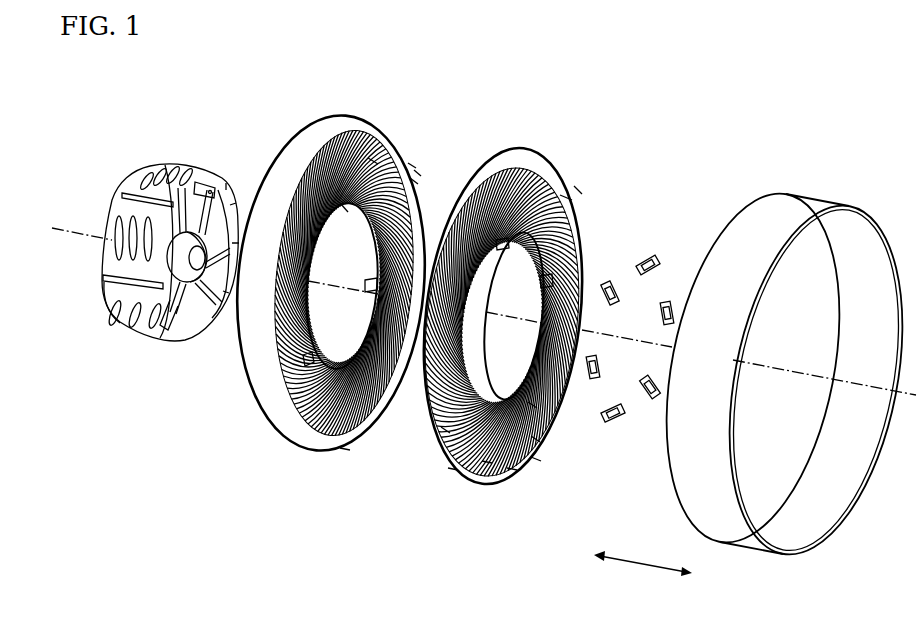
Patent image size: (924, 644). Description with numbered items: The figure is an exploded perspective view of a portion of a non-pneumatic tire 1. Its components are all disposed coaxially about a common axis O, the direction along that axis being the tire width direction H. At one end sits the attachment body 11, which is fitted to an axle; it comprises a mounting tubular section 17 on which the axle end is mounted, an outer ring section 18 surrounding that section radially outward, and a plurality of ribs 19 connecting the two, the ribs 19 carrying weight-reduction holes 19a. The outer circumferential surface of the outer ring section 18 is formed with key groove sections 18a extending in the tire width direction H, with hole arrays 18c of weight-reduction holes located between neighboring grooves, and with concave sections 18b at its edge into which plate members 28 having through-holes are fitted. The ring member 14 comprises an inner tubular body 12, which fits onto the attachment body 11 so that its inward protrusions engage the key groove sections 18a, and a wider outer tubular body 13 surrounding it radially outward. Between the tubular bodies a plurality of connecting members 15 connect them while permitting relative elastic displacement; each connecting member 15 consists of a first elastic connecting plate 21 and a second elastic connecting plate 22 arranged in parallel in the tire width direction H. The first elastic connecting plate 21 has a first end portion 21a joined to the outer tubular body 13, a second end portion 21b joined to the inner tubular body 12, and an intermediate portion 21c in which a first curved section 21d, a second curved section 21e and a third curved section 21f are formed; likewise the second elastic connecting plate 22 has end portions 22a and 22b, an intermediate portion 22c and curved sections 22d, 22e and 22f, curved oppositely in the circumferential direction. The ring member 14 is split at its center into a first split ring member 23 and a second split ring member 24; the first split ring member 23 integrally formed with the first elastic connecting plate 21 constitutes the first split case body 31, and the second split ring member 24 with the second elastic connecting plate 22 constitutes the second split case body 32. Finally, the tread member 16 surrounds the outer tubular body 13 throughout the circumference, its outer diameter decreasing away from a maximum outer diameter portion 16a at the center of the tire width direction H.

The non-pneumatic tire 1 is at (751, 80).
The attachment body 11 is at (156, 164).
The inner tubular body 12 is at (562, 250).
The outer tubular body 13 is at (593, 207).
The ring member 14 is at (644, 185).
The connecting member 15 is at (578, 190).
The tread member 16 is at (818, 186).
The maximum outer diameter portion 16a is at (795, 205).
The mounting tubular section 17 is at (203, 188).
The outer ring section 18 is at (105, 300).
The key groove section 18a is at (103, 287).
The concave section 18b is at (222, 310).
The hole array 18c is at (107, 240).
The rib 19 is at (172, 336).
The weight-reduction hole 19a is at (160, 325).
The first elastic connecting plate 21 is at (562, 152).
The first end portion 21a is at (536, 460).
The second end portion 21b is at (446, 430).
The intermediate portion 21c is at (453, 470).
The first curved section 21d is at (533, 405).
The second curved section 21e is at (512, 470).
The third curved section 21f is at (487, 463).
The second elastic connecting plate 22 is at (400, 140).
The first end portion 22a is at (412, 165).
The second end portion 22b is at (343, 207).
The intermediate portion 22c is at (345, 450).
The first curved section 22d is at (414, 180).
The second curved section 22e is at (418, 172).
The third curved section 22f is at (373, 160).
The first split ring member 23 is at (523, 136).
The second split ring member 24 is at (367, 108).
The plate member 28 is at (651, 262).
The first split case body 31 is at (588, 80).
The second split case body 32 is at (428, 48).
The axis O is at (72, 228).
The tire width direction H is at (643, 573).